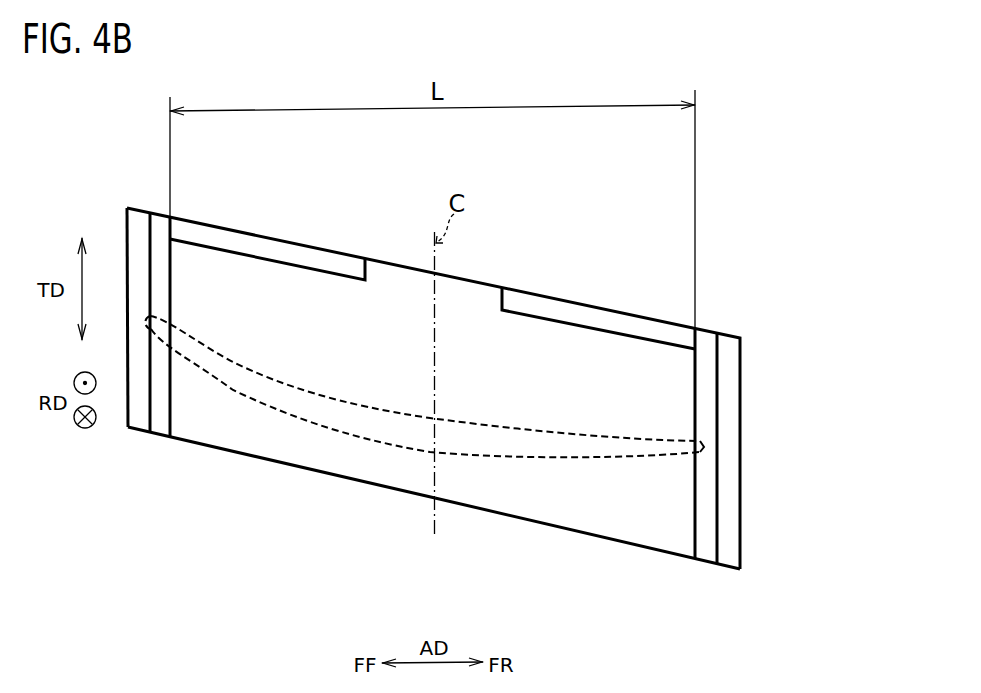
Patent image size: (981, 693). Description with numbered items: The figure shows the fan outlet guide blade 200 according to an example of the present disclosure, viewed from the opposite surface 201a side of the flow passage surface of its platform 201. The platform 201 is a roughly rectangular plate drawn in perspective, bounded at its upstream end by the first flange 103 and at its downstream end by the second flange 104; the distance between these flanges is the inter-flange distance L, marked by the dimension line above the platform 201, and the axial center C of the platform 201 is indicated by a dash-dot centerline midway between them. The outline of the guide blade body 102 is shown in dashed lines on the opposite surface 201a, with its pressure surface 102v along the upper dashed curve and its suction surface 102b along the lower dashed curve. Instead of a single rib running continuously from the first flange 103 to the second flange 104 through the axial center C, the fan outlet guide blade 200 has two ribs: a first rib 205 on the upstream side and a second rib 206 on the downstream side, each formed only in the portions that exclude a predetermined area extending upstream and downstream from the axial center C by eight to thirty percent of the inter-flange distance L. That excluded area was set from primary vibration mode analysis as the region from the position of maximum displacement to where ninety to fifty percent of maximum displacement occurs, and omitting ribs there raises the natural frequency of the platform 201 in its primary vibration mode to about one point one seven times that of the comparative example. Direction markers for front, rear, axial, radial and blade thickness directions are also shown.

The fan outlet guide blade 200 is at (360, 227).
The platform 201 is at (560, 528).
The opposite surface of the flow passage surface 201a is at (372, 462).
The first rib 205 is at (250, 245).
The second rib 206 is at (567, 310).
The first flange 103 is at (165, 423).
The second flange 104 is at (708, 555).
The guide blade body 102 is at (424, 454).
The pressure surface 102v is at (358, 403).
The suction surface 102b is at (503, 458).